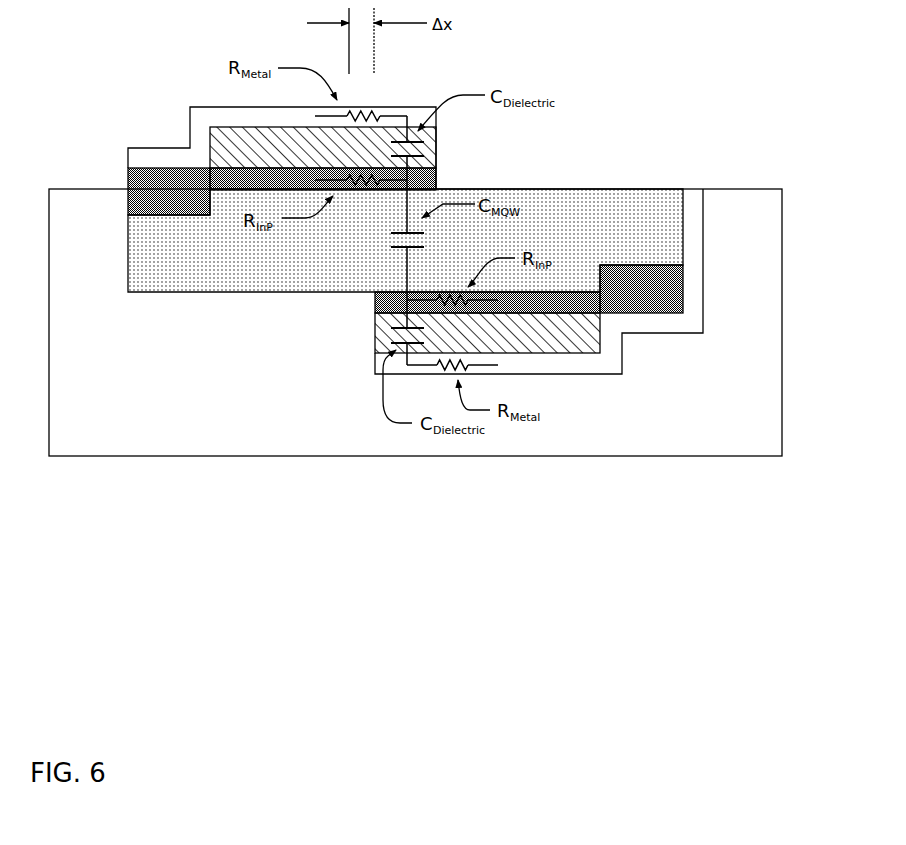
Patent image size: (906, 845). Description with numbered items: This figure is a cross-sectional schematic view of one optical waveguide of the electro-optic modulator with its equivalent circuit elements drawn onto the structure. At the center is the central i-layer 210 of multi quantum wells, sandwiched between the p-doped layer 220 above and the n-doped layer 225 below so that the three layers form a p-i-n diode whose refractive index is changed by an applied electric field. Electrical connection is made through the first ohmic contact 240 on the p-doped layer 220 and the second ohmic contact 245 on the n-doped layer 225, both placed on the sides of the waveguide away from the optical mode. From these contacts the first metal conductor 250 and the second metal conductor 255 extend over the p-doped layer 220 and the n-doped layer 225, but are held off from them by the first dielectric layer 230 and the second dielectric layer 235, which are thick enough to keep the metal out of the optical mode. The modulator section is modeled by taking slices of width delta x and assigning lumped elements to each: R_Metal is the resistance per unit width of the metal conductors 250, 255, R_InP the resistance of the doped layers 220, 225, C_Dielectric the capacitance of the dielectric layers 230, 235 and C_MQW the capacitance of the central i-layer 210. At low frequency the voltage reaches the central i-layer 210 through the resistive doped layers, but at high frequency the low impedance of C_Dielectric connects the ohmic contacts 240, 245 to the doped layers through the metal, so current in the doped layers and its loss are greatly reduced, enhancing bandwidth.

The central intrinsic layer 210 is at (590, 190).
The p-doped layer 220 is at (436, 175).
The n-doped layer 225 is at (375, 305).
The first dielectric layer 230 is at (436, 148).
The second dielectric layer 235 is at (375, 335).
The first ohmic contact 240 is at (128, 172).
The second ohmic contact 245 is at (673, 282).
The first metal conductor 250 is at (190, 107).
The second metal conductor 255 is at (375, 365).